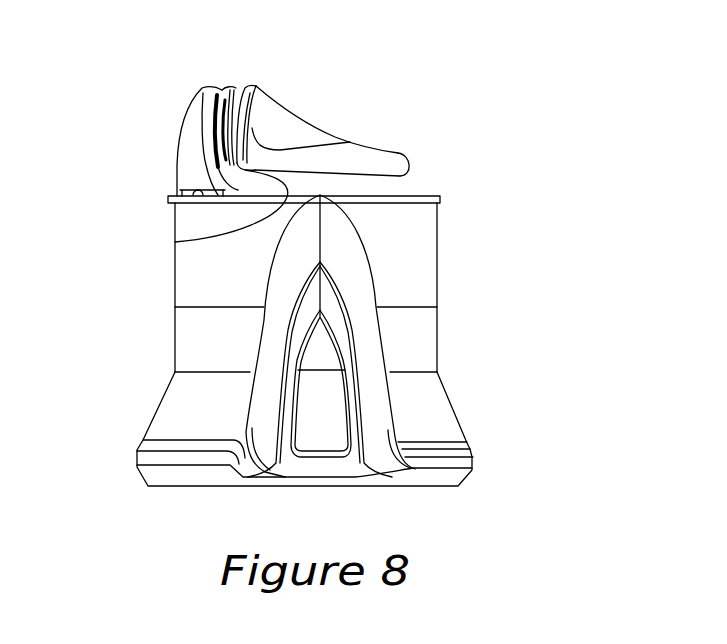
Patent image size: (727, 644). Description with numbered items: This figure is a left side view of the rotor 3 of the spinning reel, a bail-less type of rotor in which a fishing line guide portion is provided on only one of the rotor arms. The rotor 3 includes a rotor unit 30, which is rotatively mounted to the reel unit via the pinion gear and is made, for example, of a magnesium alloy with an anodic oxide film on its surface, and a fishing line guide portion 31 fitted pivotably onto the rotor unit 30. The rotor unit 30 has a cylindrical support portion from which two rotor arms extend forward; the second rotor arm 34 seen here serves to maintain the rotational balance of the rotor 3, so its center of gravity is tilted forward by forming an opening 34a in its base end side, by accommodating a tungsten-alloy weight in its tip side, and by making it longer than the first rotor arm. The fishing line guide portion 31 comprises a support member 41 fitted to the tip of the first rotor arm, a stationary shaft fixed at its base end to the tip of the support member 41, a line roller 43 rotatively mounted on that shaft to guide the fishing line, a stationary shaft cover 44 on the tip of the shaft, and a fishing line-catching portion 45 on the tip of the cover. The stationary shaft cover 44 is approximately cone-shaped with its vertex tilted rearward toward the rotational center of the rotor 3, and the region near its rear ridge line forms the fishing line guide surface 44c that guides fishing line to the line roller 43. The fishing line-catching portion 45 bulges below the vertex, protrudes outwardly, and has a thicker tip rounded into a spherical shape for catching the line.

The rotor 3 is at (443, 340).
The rotor unit 30 is at (165, 333).
The fishing line guide portion 31 is at (165, 143).
The second rotor arm 34 is at (365, 313).
The opening 34a is at (293, 392).
The support member 41 is at (185, 123).
The line roller 43 is at (228, 100).
The stationary shaft cover 44 is at (311, 125).
The fishing line guide surface 44c is at (175, 242).
The fishing line-catching portion 45 is at (398, 160).